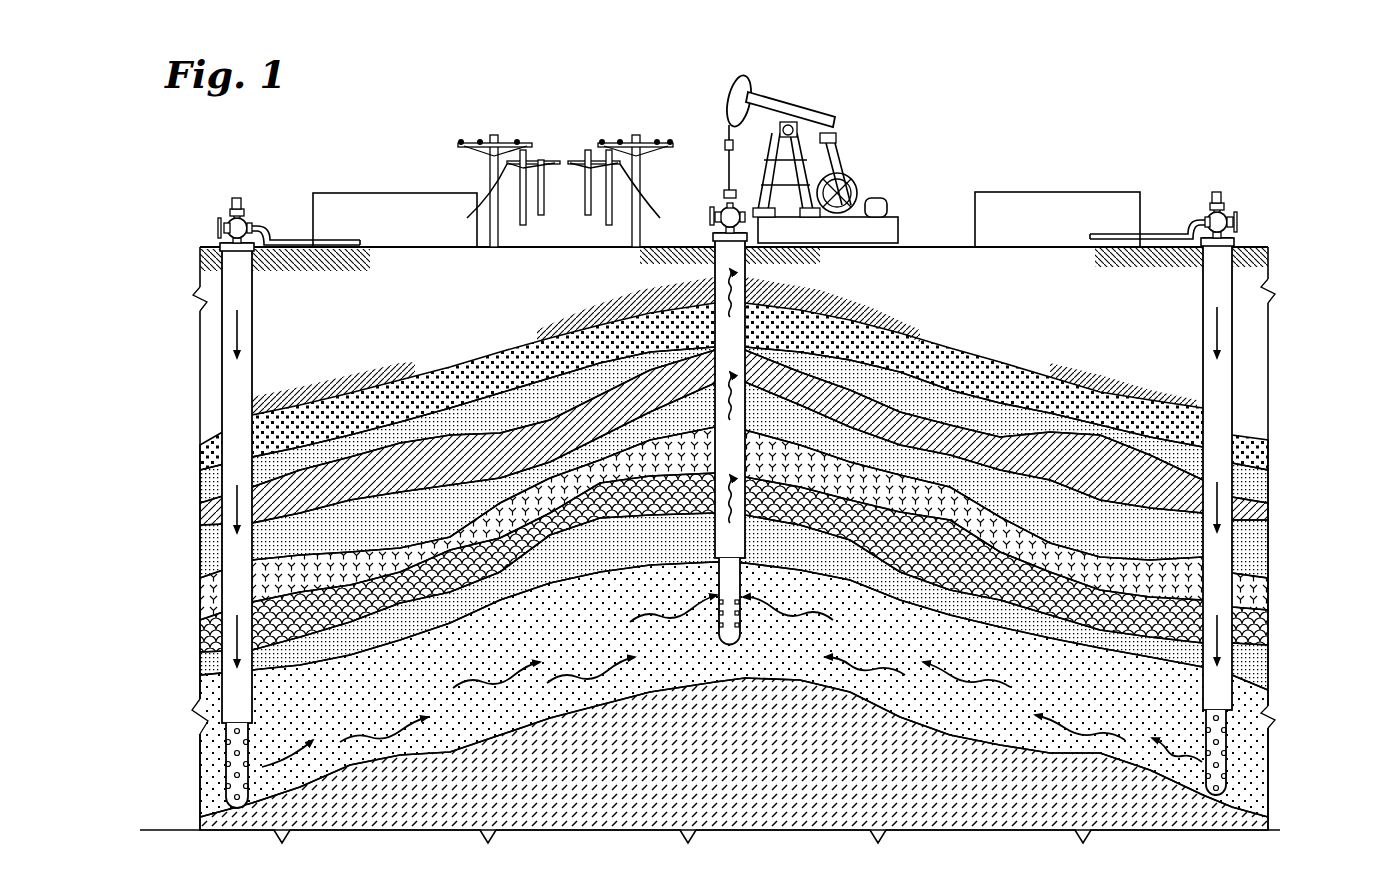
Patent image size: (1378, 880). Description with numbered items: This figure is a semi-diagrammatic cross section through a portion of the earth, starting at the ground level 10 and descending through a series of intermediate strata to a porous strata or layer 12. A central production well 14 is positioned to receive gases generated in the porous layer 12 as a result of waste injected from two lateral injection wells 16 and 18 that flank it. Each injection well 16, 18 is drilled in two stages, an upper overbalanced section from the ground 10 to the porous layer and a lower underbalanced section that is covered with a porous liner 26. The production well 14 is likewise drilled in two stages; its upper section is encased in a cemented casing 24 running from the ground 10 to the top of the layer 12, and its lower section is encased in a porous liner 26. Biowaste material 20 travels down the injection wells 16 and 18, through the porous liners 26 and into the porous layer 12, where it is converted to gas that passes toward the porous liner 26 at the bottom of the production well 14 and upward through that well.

The ground level 10 is at (928, 242).
The porous strata 12 is at (1103, 697).
The production well 14 is at (713, 237).
The injection well 16 is at (222, 243).
The injection well 18 is at (1233, 236).
The biowaste material 20 is at (205, 673).
The casing 24 is at (747, 556).
The porous liner 26 is at (228, 770).